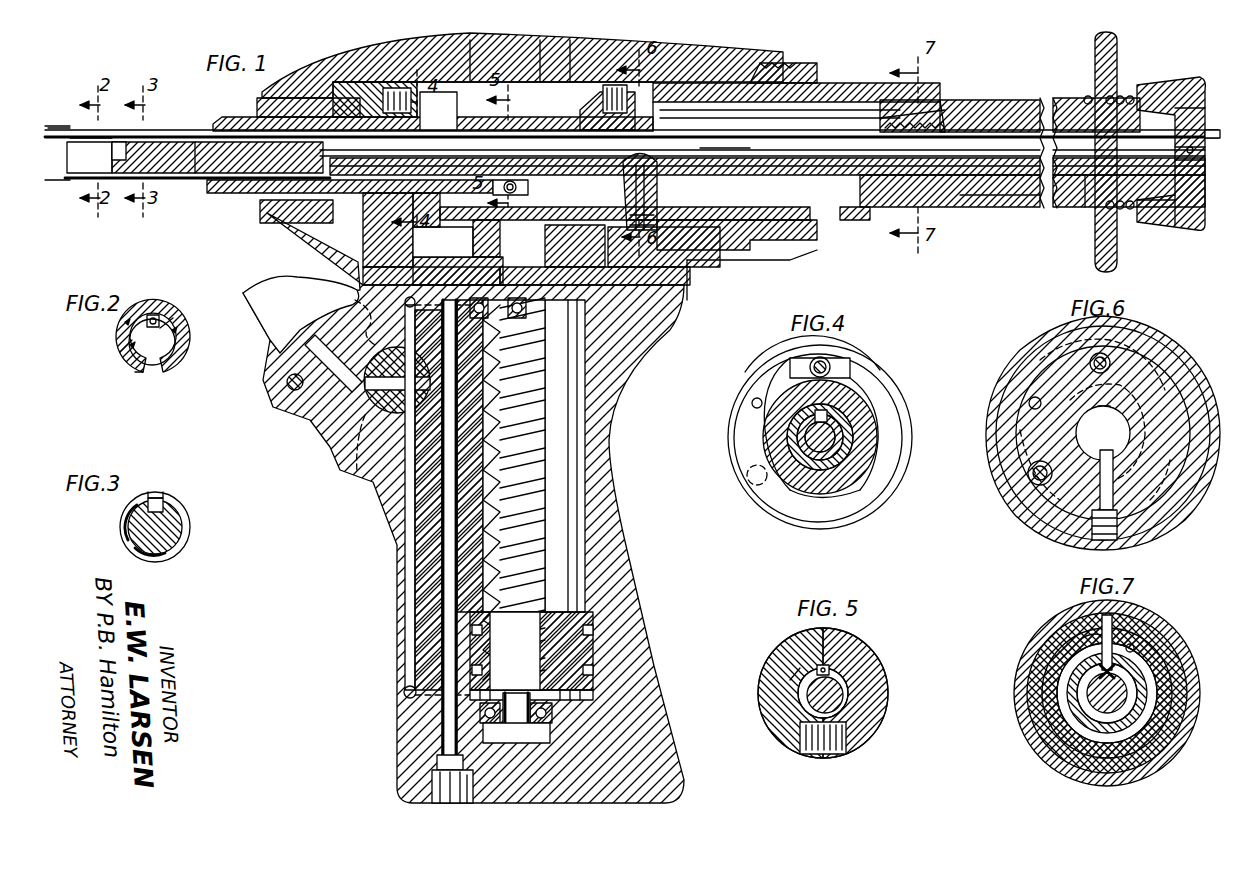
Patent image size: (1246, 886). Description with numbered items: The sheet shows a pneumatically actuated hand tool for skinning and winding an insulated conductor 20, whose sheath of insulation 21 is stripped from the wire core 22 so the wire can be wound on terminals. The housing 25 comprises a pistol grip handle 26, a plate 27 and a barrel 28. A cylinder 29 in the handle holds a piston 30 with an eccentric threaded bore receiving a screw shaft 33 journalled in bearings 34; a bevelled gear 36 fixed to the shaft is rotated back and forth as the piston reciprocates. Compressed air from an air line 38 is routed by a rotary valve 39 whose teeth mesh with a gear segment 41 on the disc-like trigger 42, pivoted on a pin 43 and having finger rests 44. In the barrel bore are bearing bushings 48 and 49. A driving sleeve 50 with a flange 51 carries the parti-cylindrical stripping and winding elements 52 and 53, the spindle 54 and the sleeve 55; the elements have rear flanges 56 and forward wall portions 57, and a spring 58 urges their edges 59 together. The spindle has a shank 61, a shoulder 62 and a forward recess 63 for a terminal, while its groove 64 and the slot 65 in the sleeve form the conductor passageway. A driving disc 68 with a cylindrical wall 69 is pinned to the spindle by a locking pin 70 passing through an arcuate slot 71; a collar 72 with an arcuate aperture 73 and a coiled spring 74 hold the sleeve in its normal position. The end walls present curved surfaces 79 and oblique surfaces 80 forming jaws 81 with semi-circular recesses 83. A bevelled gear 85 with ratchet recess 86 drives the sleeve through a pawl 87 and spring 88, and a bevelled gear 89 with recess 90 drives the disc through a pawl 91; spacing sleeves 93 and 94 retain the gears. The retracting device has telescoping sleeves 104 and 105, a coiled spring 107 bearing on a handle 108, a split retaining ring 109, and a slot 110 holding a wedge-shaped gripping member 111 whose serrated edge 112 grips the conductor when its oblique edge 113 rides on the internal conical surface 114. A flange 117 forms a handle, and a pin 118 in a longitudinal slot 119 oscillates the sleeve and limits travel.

In FIG. 1, the insulated conductor 20 is at (1213, 135).
In FIG. 7, the insulated conductor 20 is at (1110, 672).
In FIG. 1, the sheath of insulation 21 is at (1205, 170).
In FIG. 1, the wire core 22 is at (1205, 150).
In FIG. 1, the housing 25 is at (765, 268).
In FIG. 1, the handle 26 is at (620, 512).
In FIG. 1, the plate 27 is at (690, 285).
In FIG. 1, the barrel 28 is at (604, 52).
In FIG. 6, the barrel 28 is at (1020, 352).
In FIG. 1, the cylinder 29 is at (590, 475).
In FIG. 1, the piston 30 is at (600, 640).
In FIG. 1, the screw shaft 33 is at (545, 438).
In FIG. 1, the bearings 34 is at (530, 310).
In FIG. 1, the bevelled gear 36 is at (565, 222).
In FIG. 1, the air line 38 is at (430, 787).
In FIG. 1, the rotary valve 39 is at (330, 428).
In FIG. 1, the gear segment 41 is at (355, 303).
In FIG. 1, the trigger 42 is at (360, 475).
In FIG. 1, the pin 43 is at (290, 392).
In FIG. 1, the finger rests 44 is at (270, 332).
In FIG. 1, the bearing bushing 48 is at (290, 100).
In FIG. 1, the bearing bushing 49 is at (800, 66).
In FIG. 1, the driving sleeve 50 is at (335, 95).
In FIG. 4, the driving sleeve 50 is at (790, 512).
In FIG. 1, the flange 51 is at (372, 88).
In FIG. 4, the flange 51 is at (752, 372).
In FIG. 1, the stripping and winding element 52 is at (100, 138).
In FIG. 2, the stripping and winding element 52 is at (185, 358).
In FIG. 3, the stripping and winding element 52 is at (190, 520).
In FIG. 4, the stripping and winding element 52 is at (850, 435).
In FIG. 5, the stripping and winding element 52 is at (850, 715).
In FIG. 1, the stripping and winding element 53 is at (215, 124).
In FIG. 2, the stripping and winding element 53 is at (135, 372).
In FIG. 3, the stripping and winding element 53 is at (125, 540).
In FIG. 4, the stripping and winding element 53 is at (790, 425).
In FIG. 5, the stripping and winding element 53 is at (770, 672).
In FIG. 1, the spindle 54 is at (180, 180).
In FIG. 3, the spindle 54 is at (185, 548).
In FIG. 1, the sleeve 55 is at (795, 175).
In FIG. 4, the sleeve 55 is at (772, 495).
In FIG. 5, the sleeve 55 is at (860, 680).
In FIG. 6, the sleeve 55 is at (1050, 465).
In FIG. 7, the sleeve 55 is at (1070, 702).
In FIG. 1, the flanges 56 is at (548, 78).
In FIG. 5, the flanges 56 is at (775, 730).
In FIG. 1, the wall portions 57 is at (74, 170).
In FIG. 2, the wall portions 57 is at (130, 345).
In FIG. 1, the spring 58 is at (513, 182).
In FIG. 5, the spring 58 is at (840, 748).
In FIG. 2, the edges 59 is at (147, 310).
In FIG. 3, the edges 59 is at (155, 498).
In FIG. 1, the shank 61 is at (832, 168).
In FIG. 4, the shank 61 is at (800, 445).
In FIG. 5, the shank 61 is at (860, 700).
In FIG. 7, the shank 61 is at (1060, 712).
In FIG. 1, the shoulder 62 is at (243, 175).
In FIG. 1, the cylindrical recess 63 is at (120, 143).
In FIG. 3, the cylindrical recess 63 is at (128, 523).
In FIG. 1, the groove 64 is at (202, 172).
In FIG. 3, the groove 64 is at (170, 512).
In FIG. 4, the longitudinal slot 65 is at (840, 415).
In FIG. 5, the longitudinal slot 65 is at (832, 673).
In FIG. 6, the longitudinal slot 65 is at (1075, 435).
In FIG. 7, the longitudinal slot 65 is at (1085, 678).
In FIG. 1, the driving disc 68 is at (658, 120).
In FIG. 6, the driving disc 68 is at (1160, 518).
In FIG. 1, the cylindrical wall 69 is at (842, 220).
In FIG. 7, the cylindrical wall 69 is at (1070, 778).
In FIG. 1, the locking pin 70 is at (657, 195).
In FIG. 6, the locking pin 70 is at (1075, 530).
In FIG. 1, the arcuate slot 71 is at (660, 157).
In FIG. 6, the arcuate slot 71 is at (1085, 490).
In FIG. 1, the collar 72 is at (1160, 86).
In FIG. 1, the arcuate aperture 73 is at (1207, 110).
In FIG. 1, the coiled spring 74 is at (1205, 198).
In FIG. 2, the curved surfaces 79 is at (165, 372).
In FIG. 2, the oblique surfaces 80 is at (120, 352).
In FIG. 1, the stripping and winding jaws 81 is at (62, 130).
In FIG. 2, the stripping and winding jaws 81 is at (125, 322).
In FIG. 2, the semi-circular recesses 83 is at (172, 328).
In FIG. 1, the bevelled gear 85 is at (440, 112).
In FIG. 4, the bevelled gear 85 is at (878, 490).
In FIG. 4, the recess 86 is at (880, 382).
In FIG. 1, the driving pawl 87 is at (397, 88).
In FIG. 4, the driving pawl 87 is at (850, 372).
In FIG. 4, the spring 88 is at (745, 388).
In FIG. 1, the bevelled gear 89 is at (604, 104).
In FIG. 6, the bevelled gear 89 is at (1140, 535).
In FIG. 6, the recess 90 is at (1192, 372).
In FIG. 1, the driving pawl 91 is at (600, 82).
In FIG. 6, the driving pawl 91 is at (1168, 355).
In FIG. 1, the spacing sleeve 93 is at (476, 70).
In FIG. 1, the spacing sleeve 94 is at (590, 116).
In FIG. 1, the outer sleeve 104 is at (1020, 100).
In FIG. 7, the outer sleeve 104 is at (1048, 758).
In FIG. 1, the inner sleeve 105 is at (1040, 112).
In FIG. 7, the inner sleeve 105 is at (1055, 735).
In FIG. 1, the coiled spring 107 is at (1122, 100).
In FIG. 1, the handle 108 is at (1150, 212).
In FIG. 1, the split retaining ring 109 is at (840, 112).
In FIG. 1, the slot 110 is at (960, 102).
In FIG. 7, the slot 110 is at (1090, 660).
In FIG. 1, the gripping member 111 is at (890, 100).
In FIG. 7, the gripping member 111 is at (1080, 640).
In FIG. 1, the serrated edge 112 is at (970, 190).
In FIG. 1, the oblique edge 113 is at (950, 100).
In FIG. 7, the oblique edge 113 is at (1110, 615).
In FIG. 1, the internal conical surface 114 is at (930, 200).
In FIG. 7, the internal conical surface 114 is at (1120, 645).
In FIG. 1, the flange 117 is at (1097, 240).
In FIG. 1, the pin 118 is at (1085, 197).
In FIG. 1, the longitudinal slot 119 is at (1000, 212).